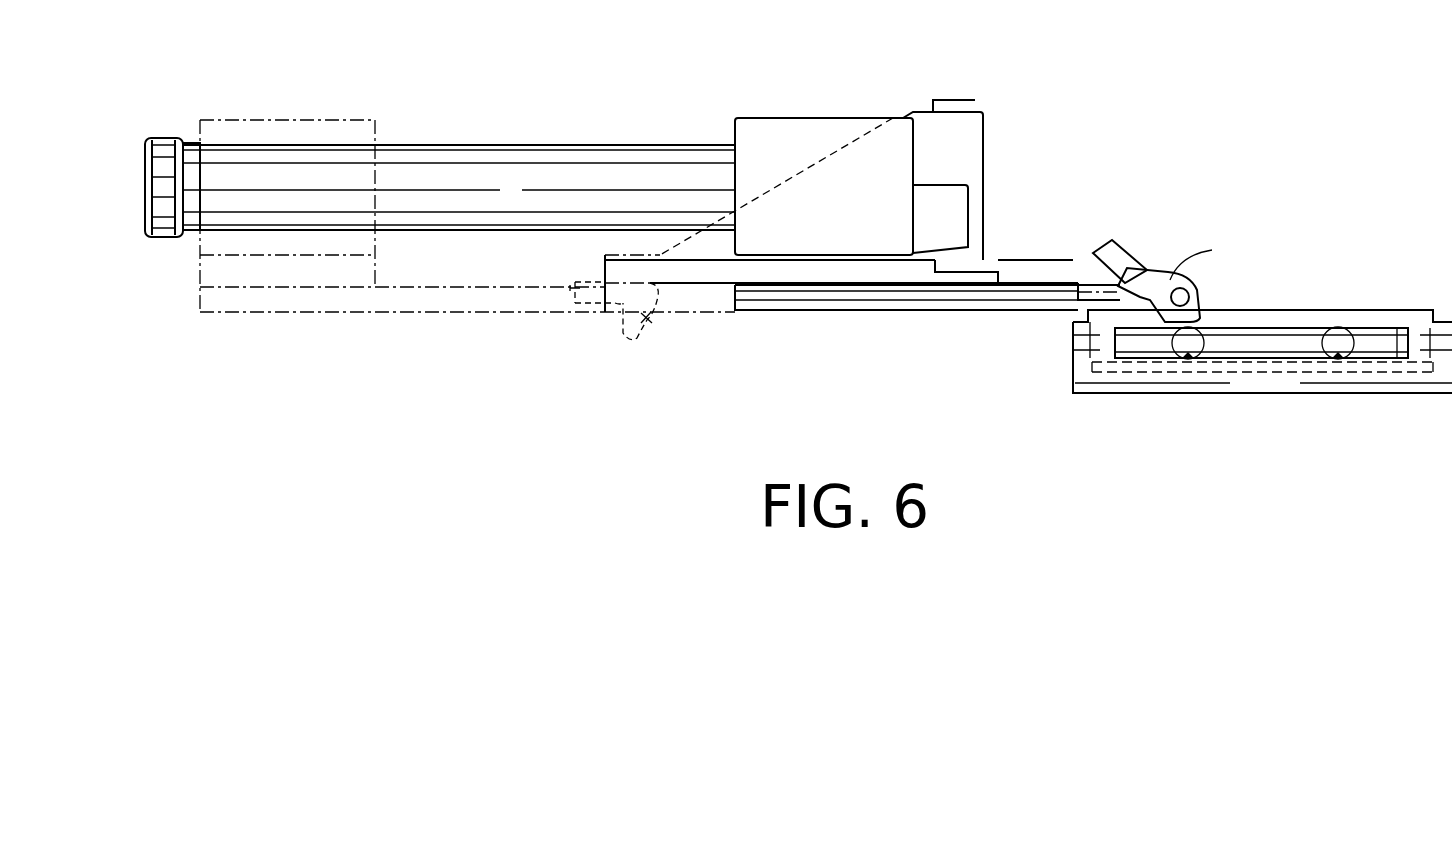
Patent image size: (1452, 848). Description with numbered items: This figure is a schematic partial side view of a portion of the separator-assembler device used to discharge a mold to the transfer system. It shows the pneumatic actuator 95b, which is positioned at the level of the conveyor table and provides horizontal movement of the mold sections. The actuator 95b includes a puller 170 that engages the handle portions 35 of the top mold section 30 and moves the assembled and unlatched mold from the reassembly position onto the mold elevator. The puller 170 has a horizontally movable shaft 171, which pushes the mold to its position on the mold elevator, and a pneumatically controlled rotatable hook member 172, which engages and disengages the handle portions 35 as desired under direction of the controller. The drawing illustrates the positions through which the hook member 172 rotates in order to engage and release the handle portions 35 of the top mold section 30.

The pneumatic actuator 95b is at (790, 98).
The puller 170 is at (1042, 195).
The horizontally movable shaft 171 is at (523, 298).
The rotatable hook member 172 is at (640, 318).
The top mold section 30 is at (1408, 380).
The handle portions 35 is at (1233, 340).